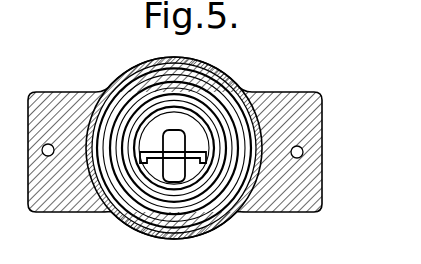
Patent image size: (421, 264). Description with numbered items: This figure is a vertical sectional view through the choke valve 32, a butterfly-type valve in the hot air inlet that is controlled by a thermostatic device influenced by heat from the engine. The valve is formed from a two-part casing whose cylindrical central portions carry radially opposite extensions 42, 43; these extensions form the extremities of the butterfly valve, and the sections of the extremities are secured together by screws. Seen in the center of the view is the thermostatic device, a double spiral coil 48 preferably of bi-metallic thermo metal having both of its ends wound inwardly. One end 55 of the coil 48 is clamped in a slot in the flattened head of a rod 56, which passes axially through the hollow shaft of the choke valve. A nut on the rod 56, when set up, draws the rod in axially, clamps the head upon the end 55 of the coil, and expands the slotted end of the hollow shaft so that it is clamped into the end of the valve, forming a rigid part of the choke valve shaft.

The choke valve 32 is at (238, 80).
The extension 42 is at (308, 98).
The extension 43 is at (62, 95).
The double spiral coil 48 is at (224, 200).
The opposite end of the coil 55 is at (134, 194).
The rod 56 is at (172, 174).